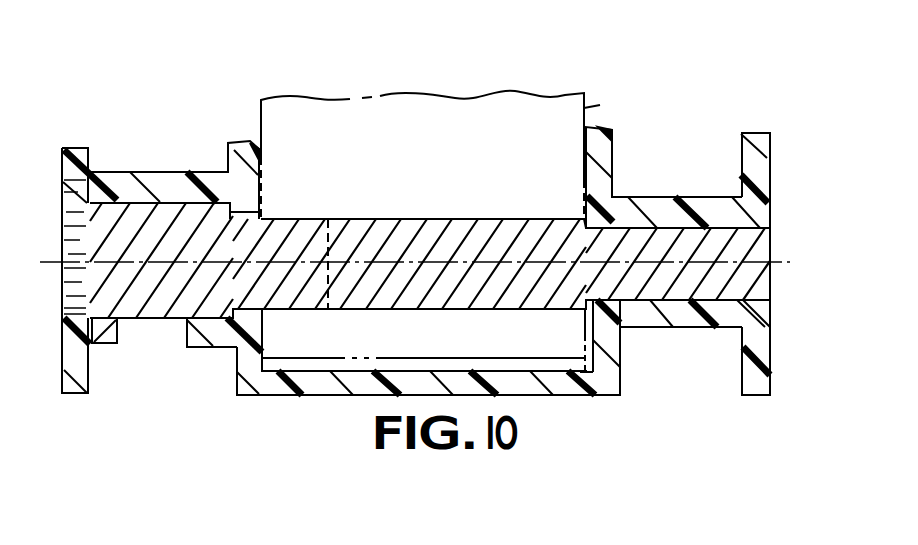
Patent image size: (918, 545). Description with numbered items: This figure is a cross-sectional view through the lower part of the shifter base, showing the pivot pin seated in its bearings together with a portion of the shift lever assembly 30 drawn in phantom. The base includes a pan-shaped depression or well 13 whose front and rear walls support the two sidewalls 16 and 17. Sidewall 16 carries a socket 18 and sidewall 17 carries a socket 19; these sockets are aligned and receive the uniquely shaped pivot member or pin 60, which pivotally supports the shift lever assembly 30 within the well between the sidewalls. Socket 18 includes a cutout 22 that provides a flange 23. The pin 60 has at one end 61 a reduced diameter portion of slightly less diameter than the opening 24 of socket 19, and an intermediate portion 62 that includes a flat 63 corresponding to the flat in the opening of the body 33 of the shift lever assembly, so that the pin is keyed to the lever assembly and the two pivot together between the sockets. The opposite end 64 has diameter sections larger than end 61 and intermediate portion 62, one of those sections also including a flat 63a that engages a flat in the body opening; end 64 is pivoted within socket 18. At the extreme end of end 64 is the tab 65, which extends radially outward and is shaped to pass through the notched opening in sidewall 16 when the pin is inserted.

The well 13 is at (314, 397).
The sidewall 16 is at (60, 155).
The sidewall 17 is at (757, 181).
The socket 18 is at (198, 347).
The socket 19 is at (677, 320).
The cutout 22 is at (160, 334).
The flange 23 is at (76, 372).
The opening 24 is at (732, 233).
The shift lever assembly 30 is at (570, 90).
The body 33 is at (585, 108).
The pivot member or pin 60 is at (363, 243).
The end 61 is at (672, 232).
The intermediate portion 62 is at (462, 219).
The flat 63 is at (518, 219).
The flat 63a is at (297, 218).
The end 64 is at (168, 212).
The tab 65 is at (107, 340).